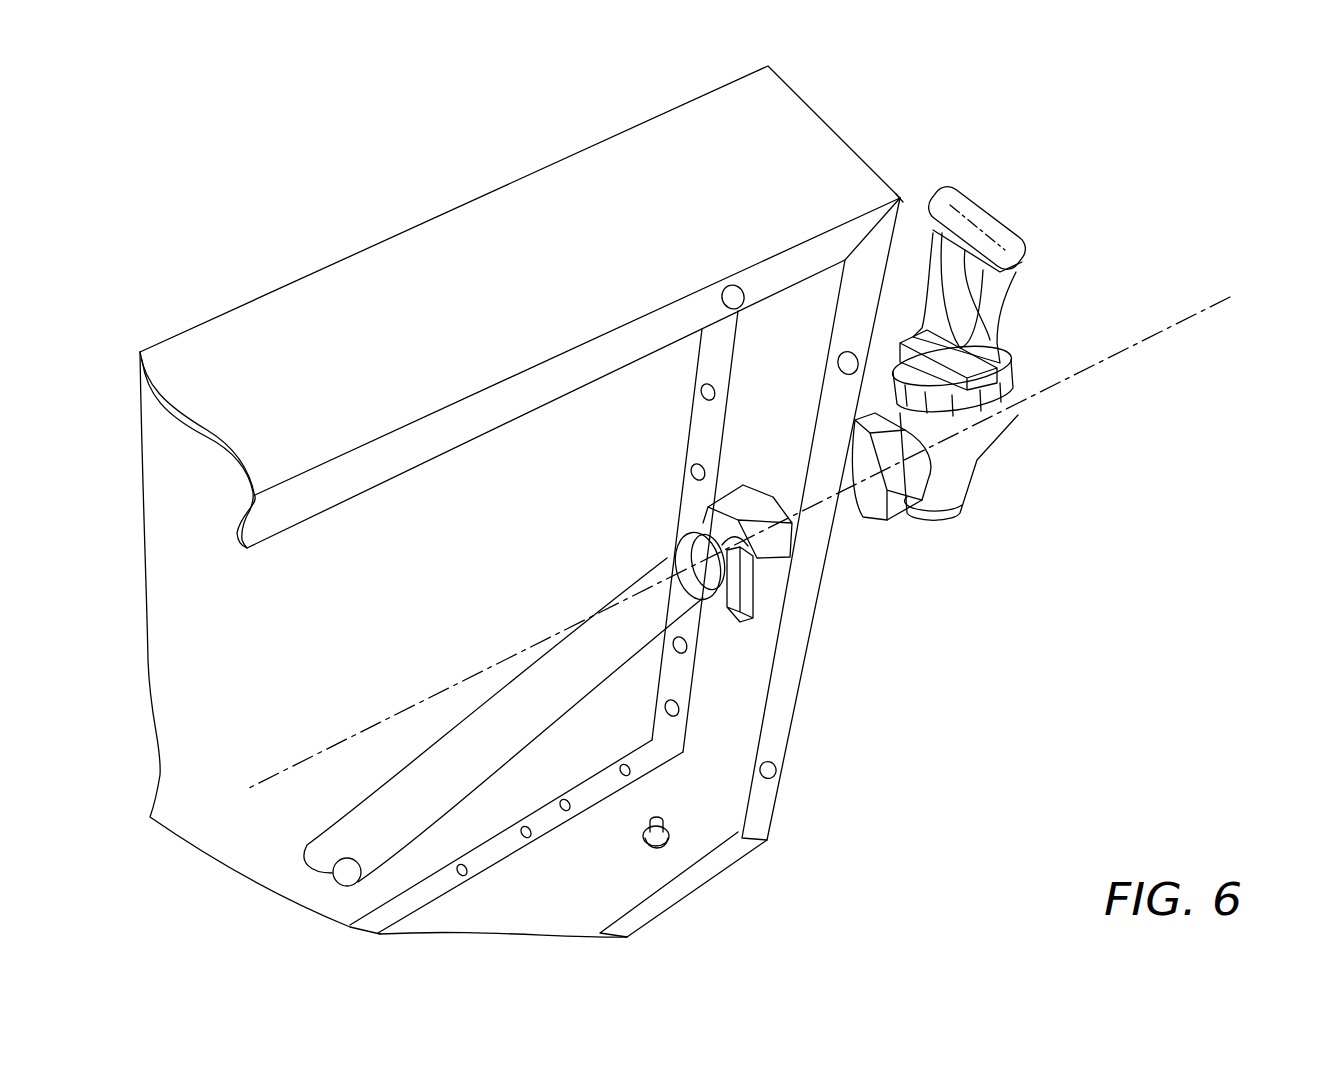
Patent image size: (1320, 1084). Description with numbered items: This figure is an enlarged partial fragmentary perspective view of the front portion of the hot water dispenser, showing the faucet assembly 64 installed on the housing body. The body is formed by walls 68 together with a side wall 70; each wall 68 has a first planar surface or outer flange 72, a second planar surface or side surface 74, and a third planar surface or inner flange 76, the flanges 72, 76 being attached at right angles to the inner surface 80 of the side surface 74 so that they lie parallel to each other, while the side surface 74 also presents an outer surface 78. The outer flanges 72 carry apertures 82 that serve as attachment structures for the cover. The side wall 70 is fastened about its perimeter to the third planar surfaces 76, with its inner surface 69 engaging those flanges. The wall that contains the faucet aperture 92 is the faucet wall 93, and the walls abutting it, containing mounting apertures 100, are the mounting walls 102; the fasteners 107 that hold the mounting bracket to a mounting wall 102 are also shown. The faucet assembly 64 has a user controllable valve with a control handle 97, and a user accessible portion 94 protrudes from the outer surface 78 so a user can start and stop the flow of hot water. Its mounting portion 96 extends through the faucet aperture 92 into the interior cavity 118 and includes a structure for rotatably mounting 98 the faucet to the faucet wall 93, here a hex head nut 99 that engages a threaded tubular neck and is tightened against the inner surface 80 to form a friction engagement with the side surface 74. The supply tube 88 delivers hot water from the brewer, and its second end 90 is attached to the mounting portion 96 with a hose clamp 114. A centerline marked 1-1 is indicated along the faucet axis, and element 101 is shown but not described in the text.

The faucet assembly 64 is at (1046, 420).
The walls 68 is at (436, 284).
The inner surface 69 is at (590, 430).
The side wall 70 is at (507, 465).
The first planar surface 72 is at (766, 787).
The second planar surface 74 is at (737, 702).
The third planar surface 76 is at (668, 735).
The outer surface 78 is at (493, 290).
The inner surface 80 is at (807, 348).
The apertures 82 is at (731, 287).
The supply tube 88 is at (480, 747).
The second end 90 is at (703, 603).
The faucet aperture 92 is at (787, 518).
The faucet wall 93 is at (720, 750).
The user accessible portion 94 is at (1033, 356).
The mounting portion 96 is at (758, 583).
The control handle 97 is at (993, 308).
The structure for rotatably mounting 98 is at (805, 533).
The hex head nut 99 is at (808, 571).
The mounting apertures 100 is at (657, 853).
The hex nut 101 is at (867, 492).
The mounting walls 102 is at (381, 315).
The fasteners 107 is at (670, 836).
The hose clamp 114 is at (757, 605).
The interior cavity 118 is at (333, 589).
The section line 1-1 is at (755, 534).